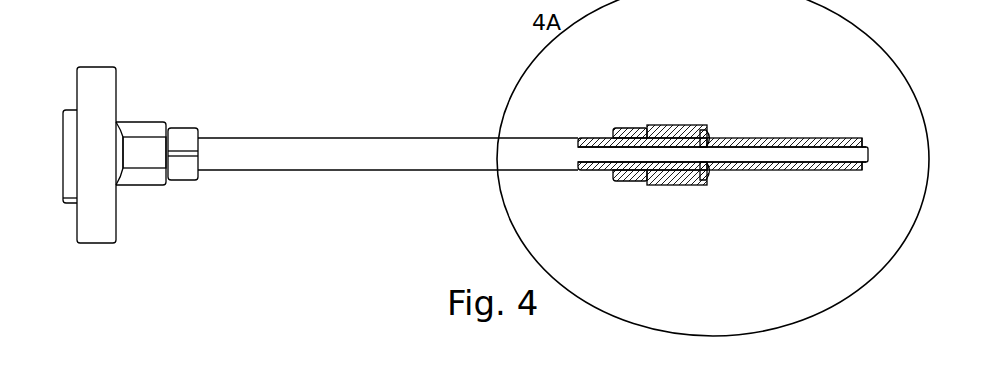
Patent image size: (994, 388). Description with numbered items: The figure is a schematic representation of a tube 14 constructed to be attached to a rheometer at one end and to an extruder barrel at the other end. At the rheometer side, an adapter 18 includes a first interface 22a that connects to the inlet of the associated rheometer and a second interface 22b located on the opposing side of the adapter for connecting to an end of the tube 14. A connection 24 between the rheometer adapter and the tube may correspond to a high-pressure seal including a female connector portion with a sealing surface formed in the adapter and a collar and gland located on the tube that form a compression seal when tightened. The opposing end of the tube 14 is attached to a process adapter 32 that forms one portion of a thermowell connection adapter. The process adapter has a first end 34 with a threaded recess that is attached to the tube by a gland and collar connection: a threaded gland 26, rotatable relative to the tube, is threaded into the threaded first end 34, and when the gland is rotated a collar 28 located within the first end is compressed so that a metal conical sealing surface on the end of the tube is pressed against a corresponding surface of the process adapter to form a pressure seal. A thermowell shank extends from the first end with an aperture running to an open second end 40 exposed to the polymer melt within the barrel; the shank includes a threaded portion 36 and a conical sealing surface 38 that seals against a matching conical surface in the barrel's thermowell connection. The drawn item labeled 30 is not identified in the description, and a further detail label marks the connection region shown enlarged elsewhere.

The tube 14 is at (388, 123).
The adapter 18 is at (125, 141).
The first interface 22a is at (74, 157).
The second interface 22b is at (144, 178).
The connection 24 is at (191, 170).
The threaded gland 26 is at (625, 139).
The collar 28 is at (656, 112).
The washer 30 is at (733, 133).
The process adapter 32 is at (784, 123).
The first end 34 is at (683, 185).
The threaded portion 36 is at (743, 135).
The conical sealing surface 38 is at (881, 166).
The open second end 40 is at (868, 157).